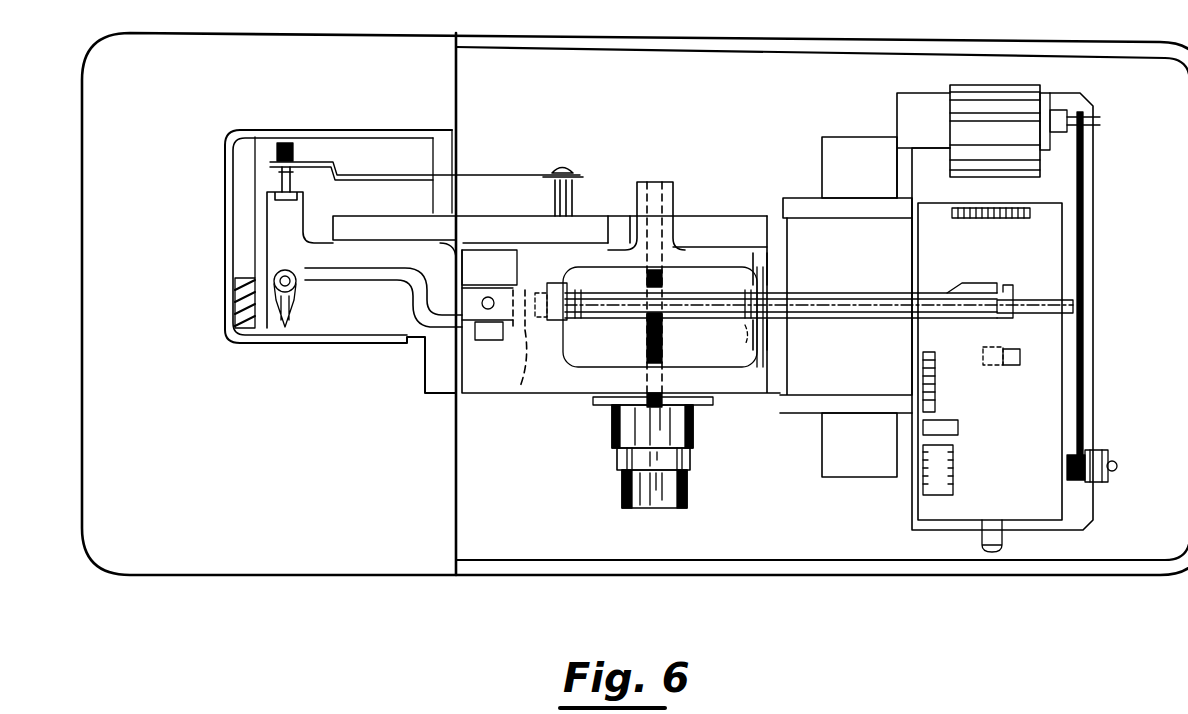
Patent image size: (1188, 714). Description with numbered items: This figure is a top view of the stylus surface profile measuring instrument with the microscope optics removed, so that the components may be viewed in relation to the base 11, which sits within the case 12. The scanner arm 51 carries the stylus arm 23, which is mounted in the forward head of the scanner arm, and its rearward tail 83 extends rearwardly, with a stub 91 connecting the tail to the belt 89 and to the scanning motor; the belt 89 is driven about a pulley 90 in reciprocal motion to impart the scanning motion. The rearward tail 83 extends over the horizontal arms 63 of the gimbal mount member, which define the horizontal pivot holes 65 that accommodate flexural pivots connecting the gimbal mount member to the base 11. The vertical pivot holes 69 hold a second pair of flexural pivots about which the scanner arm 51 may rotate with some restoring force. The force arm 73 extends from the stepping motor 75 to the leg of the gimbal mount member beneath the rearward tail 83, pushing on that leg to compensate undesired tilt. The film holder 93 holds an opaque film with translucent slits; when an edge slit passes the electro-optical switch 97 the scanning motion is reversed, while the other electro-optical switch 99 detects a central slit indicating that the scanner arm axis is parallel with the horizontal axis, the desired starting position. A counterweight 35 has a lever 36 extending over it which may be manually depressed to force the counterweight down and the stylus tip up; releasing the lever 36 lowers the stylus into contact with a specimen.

The case 12 is at (708, 43).
The base 11 is at (723, 239).
The stylus arm 23 is at (278, 183).
The counterweight 35 is at (289, 142).
The lever 36 is at (354, 173).
The scanner arm 51 is at (405, 262).
The horizontal arms 63 is at (533, 287).
The horizontal pivot holes 65 is at (538, 392).
The vertical pivot holes 69 is at (488, 310).
The force arm 73 is at (667, 288).
The stepping motor 75 is at (653, 497).
The rearward tail 83 is at (838, 298).
The belt 89 is at (1084, 230).
The pulley 90 is at (1113, 465).
The stub 91 is at (1087, 307).
The film holder 93 is at (950, 323).
The electro-optical switch 97 is at (1023, 365).
The electro-optical switch 99 is at (1013, 320).